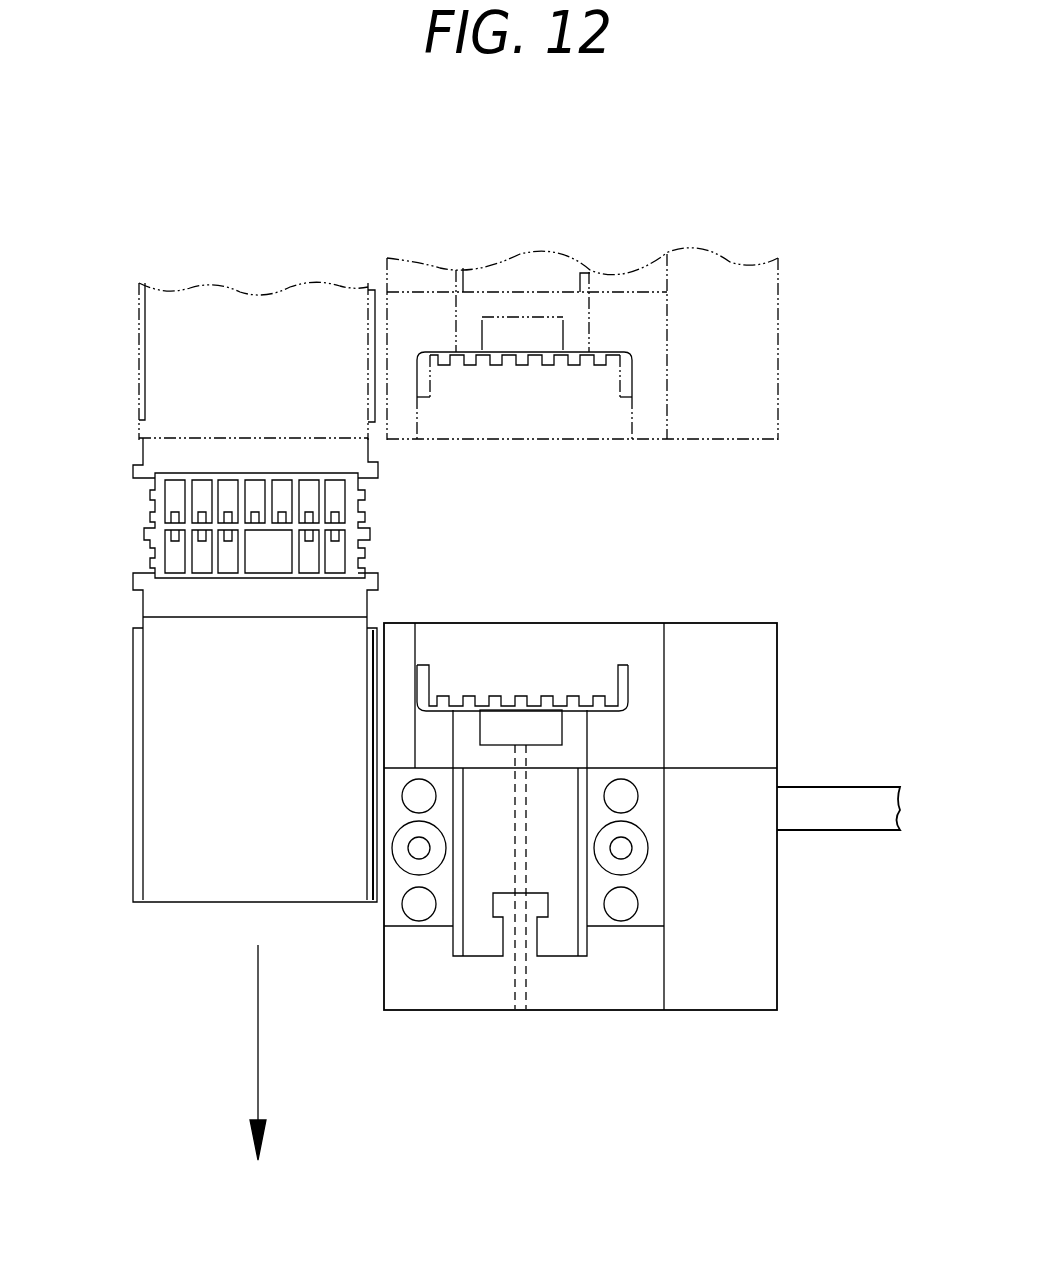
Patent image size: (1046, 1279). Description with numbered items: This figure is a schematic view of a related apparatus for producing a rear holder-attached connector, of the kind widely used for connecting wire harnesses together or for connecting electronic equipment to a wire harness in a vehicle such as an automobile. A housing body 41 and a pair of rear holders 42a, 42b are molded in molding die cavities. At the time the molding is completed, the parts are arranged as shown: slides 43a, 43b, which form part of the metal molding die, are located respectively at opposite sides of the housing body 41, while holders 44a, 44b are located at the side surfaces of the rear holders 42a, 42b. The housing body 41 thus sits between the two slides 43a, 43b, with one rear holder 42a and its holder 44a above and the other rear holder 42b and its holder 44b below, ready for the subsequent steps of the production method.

The housing body 41 is at (144, 534).
The rear holder 42a is at (537, 352).
The rear holder 42b is at (519, 697).
The slide 43a is at (178, 362).
The slide 43b is at (182, 882).
The holder 44a is at (610, 313).
The holder 44b is at (448, 998).